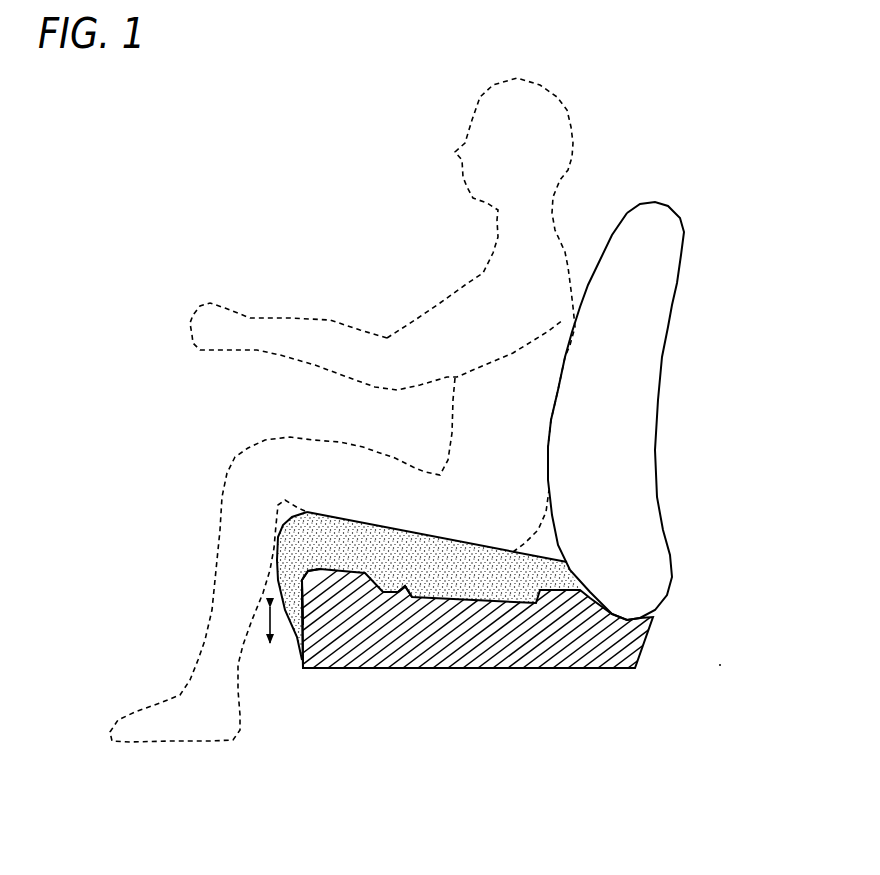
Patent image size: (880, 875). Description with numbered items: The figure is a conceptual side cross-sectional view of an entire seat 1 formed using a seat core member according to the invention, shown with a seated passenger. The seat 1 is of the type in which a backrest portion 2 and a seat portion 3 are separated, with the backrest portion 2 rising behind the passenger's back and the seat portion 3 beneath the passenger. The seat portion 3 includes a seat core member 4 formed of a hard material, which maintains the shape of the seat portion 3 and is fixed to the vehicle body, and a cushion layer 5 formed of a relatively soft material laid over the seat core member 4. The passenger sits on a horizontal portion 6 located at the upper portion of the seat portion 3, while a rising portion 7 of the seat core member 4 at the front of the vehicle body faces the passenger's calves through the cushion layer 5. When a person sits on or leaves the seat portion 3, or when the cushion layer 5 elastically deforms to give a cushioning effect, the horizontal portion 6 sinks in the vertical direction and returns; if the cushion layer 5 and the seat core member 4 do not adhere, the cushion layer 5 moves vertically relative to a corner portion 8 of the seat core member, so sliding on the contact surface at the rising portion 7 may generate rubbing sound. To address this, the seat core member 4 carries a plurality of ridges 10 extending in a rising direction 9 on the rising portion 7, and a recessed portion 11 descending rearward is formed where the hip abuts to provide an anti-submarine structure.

The seat 1 is at (505, 498).
The backrest portion 2 is at (632, 432).
The seat portion 3 is at (505, 597).
The seat core member 4 is at (505, 637).
The cushion layer 5 is at (377, 552).
The horizontal portion 6 is at (408, 530).
The rising portion 7 is at (300, 637).
The corner portion 8 is at (306, 564).
The rising direction 9 is at (258, 625).
The ridges 10 is at (300, 603).
The recessed portion 11 is at (410, 595).